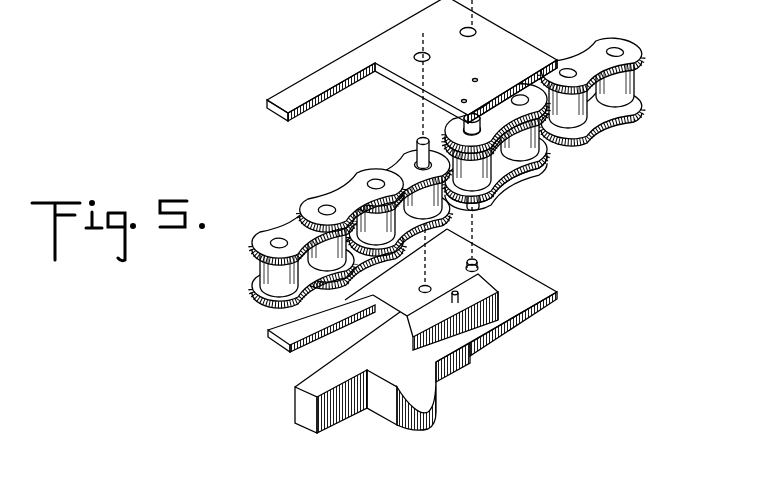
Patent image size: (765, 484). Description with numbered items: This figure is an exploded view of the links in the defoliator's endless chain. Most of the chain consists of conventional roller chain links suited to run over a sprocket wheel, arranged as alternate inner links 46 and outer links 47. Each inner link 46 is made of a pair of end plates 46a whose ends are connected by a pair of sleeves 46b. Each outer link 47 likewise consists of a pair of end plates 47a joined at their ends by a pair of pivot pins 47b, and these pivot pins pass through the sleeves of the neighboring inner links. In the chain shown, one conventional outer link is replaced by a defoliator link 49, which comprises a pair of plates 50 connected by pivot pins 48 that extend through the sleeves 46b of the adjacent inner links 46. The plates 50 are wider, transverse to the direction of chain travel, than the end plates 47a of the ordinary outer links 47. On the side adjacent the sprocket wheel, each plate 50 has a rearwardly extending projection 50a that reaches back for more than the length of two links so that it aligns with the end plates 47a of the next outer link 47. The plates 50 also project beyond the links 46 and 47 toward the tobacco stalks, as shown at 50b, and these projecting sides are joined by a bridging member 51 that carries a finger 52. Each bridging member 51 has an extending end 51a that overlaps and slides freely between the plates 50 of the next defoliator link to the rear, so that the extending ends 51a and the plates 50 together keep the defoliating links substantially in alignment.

The inner link 46 is at (535, 158).
The end plate 46a is at (517, 160).
The sleeve 46b is at (500, 183).
The outer link 47 is at (664, 144).
The end plate 47a is at (580, 140).
The pivot pin 47b is at (585, 95).
The pivot pin 48 is at (418, 135).
The defoliator link 49 is at (586, 321).
The plate 50 is at (527, 318).
The rearwardly extending projection 50a is at (268, 338).
The projecting side 50b is at (552, 291).
The bridging member 51 is at (473, 324).
The extending end 51a is at (307, 411).
The finger 52 is at (426, 403).